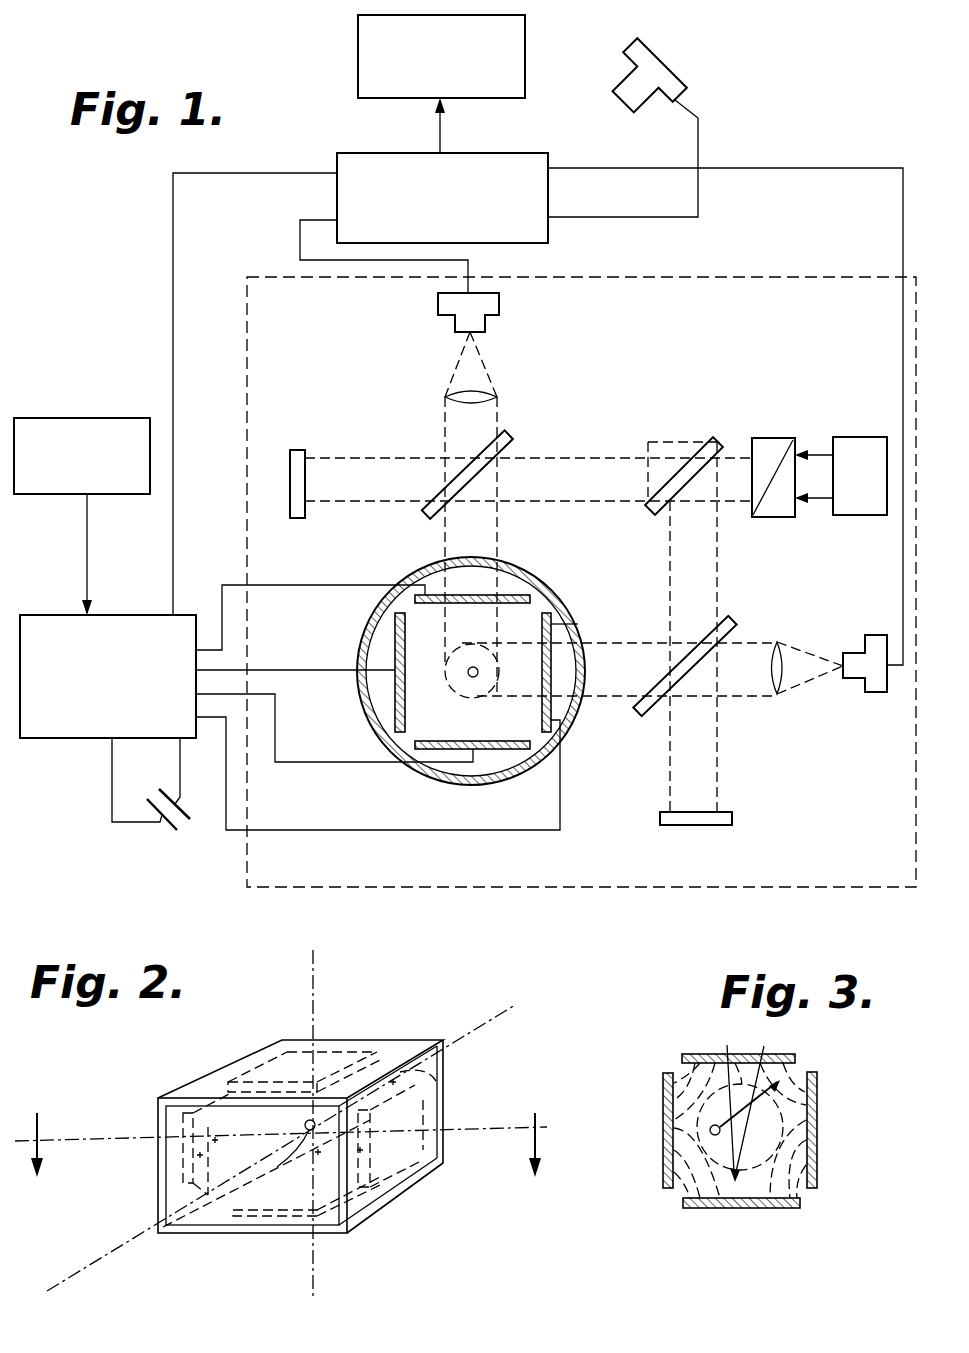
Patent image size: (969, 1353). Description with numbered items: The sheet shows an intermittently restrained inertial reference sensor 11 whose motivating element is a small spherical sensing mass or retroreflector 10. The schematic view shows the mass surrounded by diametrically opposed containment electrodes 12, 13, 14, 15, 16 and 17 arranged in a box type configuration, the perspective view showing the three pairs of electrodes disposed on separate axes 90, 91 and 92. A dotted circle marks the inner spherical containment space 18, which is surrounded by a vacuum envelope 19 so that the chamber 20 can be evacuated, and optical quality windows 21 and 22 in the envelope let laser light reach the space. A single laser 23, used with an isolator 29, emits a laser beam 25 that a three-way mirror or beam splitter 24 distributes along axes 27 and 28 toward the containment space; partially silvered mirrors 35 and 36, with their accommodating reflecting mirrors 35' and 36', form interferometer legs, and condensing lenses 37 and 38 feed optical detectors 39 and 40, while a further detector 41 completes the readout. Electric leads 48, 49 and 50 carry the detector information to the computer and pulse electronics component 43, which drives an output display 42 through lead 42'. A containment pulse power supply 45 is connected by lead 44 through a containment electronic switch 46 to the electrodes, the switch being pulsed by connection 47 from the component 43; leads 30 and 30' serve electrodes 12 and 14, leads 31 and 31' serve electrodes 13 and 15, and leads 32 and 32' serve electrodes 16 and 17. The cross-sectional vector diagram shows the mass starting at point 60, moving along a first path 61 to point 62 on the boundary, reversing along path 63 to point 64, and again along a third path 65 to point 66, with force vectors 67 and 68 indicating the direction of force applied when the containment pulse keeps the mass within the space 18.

In FIG. 1, the sensing mass 10 is at (474, 677).
In FIG. 2, the sensing mass 10 is at (287, 1156).
In FIG. 3, the sensing mass 10 is at (710, 1130).
In FIG. 1, the intermittently restrained inertial reference sensor 11 is at (627, 886).
In FIG. 2, the intermittently restrained inertial reference sensor 11 is at (203, 1057).
In FIG. 3, the intermittently restrained inertial reference sensor 11 is at (652, 1194).
In FIG. 1, the containment electrode 12 is at (378, 620).
In FIG. 2, the containment electrode 12 is at (180, 1127).
In FIG. 3, the containment electrode 12 is at (663, 1085).
In FIG. 1, the containment electrode 13 is at (515, 595).
In FIG. 3, the containment electrode 13 is at (688, 1054).
In FIG. 1, the containment electrode 14 is at (578, 622).
In FIG. 2, the containment electrode 14 is at (445, 1102).
In FIG. 3, the containment electrode 14 is at (818, 1133).
In FIG. 1, the containment electrode 15 is at (500, 750).
In FIG. 2, the containment electrode 15 is at (225, 1200).
In FIG. 3, the containment electrode 15 is at (795, 1208).
In FIG. 1, the containment electrode 16 is at (160, 825).
In FIG. 2, the containment electrode 16 is at (293, 1222).
In FIG. 1, the containment electrode 17 is at (165, 790).
In FIG. 2, the containment electrode 17 is at (268, 1072).
In FIG. 1, the inner spherical containment space 18 is at (445, 665).
In FIG. 3, the inner spherical containment space 18 is at (714, 1161).
In FIG. 1, the vacuum envelope 19 is at (432, 778).
In FIG. 1, the chamber 20 is at (357, 700).
In FIG. 1, the optical quality window 21 is at (470, 557).
In FIG. 1, the optical quality window 22 is at (583, 673).
In FIG. 1, the laser 23 is at (858, 437).
In FIG. 1, the three-way mirror or beam splitter 24 is at (700, 450).
In FIG. 1, the laser beam 25 is at (740, 478).
In FIG. 1, the axis 27 is at (695, 597).
In FIG. 1, the axis 28 is at (660, 480).
In FIG. 1, the isolator 29 is at (780, 438).
In FIG. 1, the lead 30 is at (295, 645).
In FIG. 1, the lead 30' is at (409, 782).
In FIG. 1, the lead 31 is at (310, 595).
In FIG. 1, the lead 31' is at (334, 752).
In FIG. 1, the lead 32 is at (101, 780).
In FIG. 1, the lead 32' is at (200, 803).
In FIG. 1, the partially silvered mirror 35 is at (684, 694).
In FIG. 1, the reflecting mirror 35' is at (736, 815).
In FIG. 1, the partially silvered mirror 36 is at (493, 458).
In FIG. 1, the reflecting mirror 36' is at (516, 448).
In FIG. 1, the condensing lens 37 is at (775, 685).
In FIG. 1, the condensing lens 38 is at (450, 393).
In FIG. 1, the optical detector 39 is at (877, 692).
In FIG. 1, the optical detector 40 is at (499, 303).
In FIG. 1, the detector 41 is at (663, 62).
In FIG. 1, the output display 42 is at (407, 50).
In FIG. 1, the lead 42' is at (398, 125).
In FIG. 1, the computer and pulse electronics component 43 is at (510, 153).
In FIG. 1, the lead 44 is at (87, 530).
In FIG. 1, the containment pulse power supply 45 is at (78, 418).
In FIG. 1, the containment electronic switch 46 is at (40, 620).
In FIG. 1, the connection 47 is at (173, 215).
In FIG. 1, the electric lead 48 is at (903, 541).
In FIG. 1, the electric lead 49 is at (300, 237).
In FIG. 1, the electric lead 50 is at (698, 138).
In FIG. 3, the starting point 60 is at (725, 1094).
In FIG. 3, the first path 61 is at (756, 1100).
In FIG. 3, the boundary point 62 is at (745, 1187).
In FIG. 3, the second path 63 is at (812, 1165).
In FIG. 3, the boundary point 64 is at (795, 1100).
In FIG. 3, the third path 65 is at (778, 1080).
In FIG. 3, the boundary point 66 is at (680, 1158).
In FIG. 3, the force vector 67 is at (728, 1195).
In FIG. 3, the force vector 68 is at (788, 1068).
In FIG. 2, the axis 90 is at (105, 1240).
In FIG. 2, the axis 91 is at (455, 1150).
In FIG. 2, the axis 92 is at (320, 976).